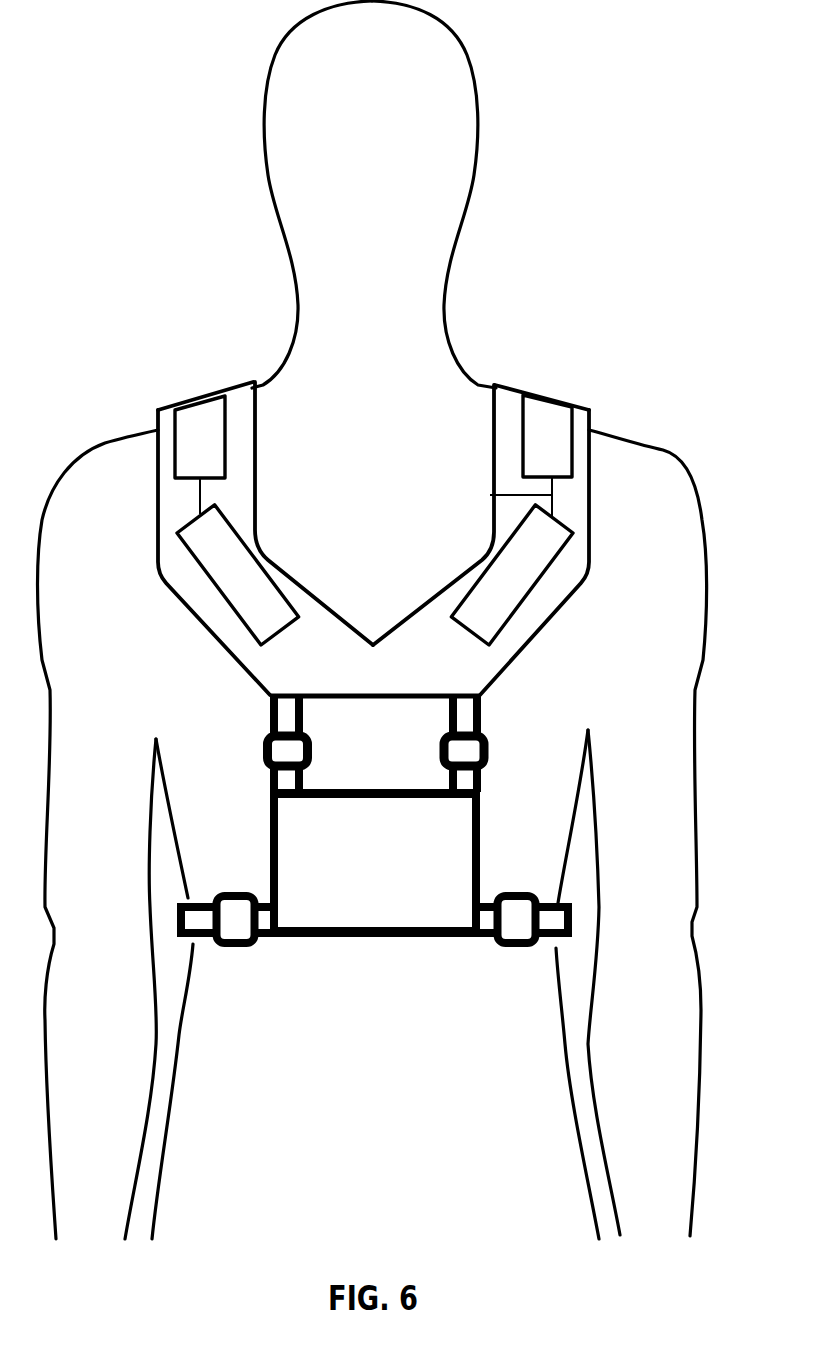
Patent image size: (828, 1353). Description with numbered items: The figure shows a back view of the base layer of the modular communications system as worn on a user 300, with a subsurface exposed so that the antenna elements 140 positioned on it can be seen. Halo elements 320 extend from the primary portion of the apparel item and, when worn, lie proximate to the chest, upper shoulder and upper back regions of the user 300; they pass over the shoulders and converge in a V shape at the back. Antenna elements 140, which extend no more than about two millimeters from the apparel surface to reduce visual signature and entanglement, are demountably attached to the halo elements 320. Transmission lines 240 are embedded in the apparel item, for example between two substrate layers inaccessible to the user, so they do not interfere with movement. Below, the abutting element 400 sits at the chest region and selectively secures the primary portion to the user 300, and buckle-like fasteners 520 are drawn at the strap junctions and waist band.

The user 300 is at (353, 126).
The halo elements 320 is at (353, 679).
The transmission lines 240 is at (490, 495).
The antenna elements 140 is at (277, 570).
The abutting element 400 is at (353, 879).
The buckles 520 is at (262, 752).